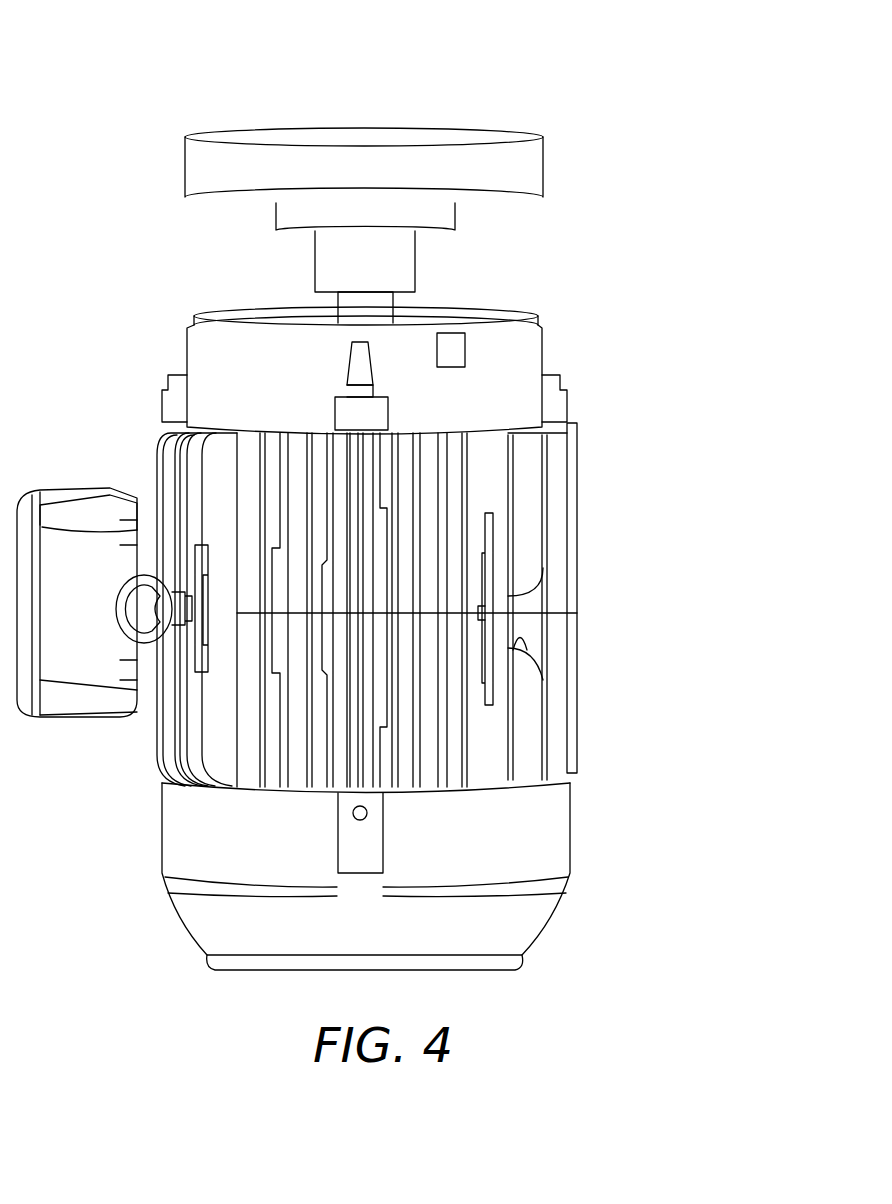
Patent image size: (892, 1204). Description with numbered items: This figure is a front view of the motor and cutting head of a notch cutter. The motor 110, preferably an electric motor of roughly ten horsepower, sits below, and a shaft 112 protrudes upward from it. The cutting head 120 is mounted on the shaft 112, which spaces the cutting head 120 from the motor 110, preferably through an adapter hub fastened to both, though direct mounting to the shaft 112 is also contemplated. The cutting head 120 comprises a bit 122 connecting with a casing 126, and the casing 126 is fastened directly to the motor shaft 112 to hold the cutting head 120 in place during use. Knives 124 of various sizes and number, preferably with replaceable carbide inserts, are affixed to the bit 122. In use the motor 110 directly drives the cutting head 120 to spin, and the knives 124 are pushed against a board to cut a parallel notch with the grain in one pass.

The motor 110 is at (159, 313).
The shaft 112 is at (368, 303).
The cutting head 120 is at (160, 117).
The bit 122 is at (543, 160).
The knives 124 is at (427, 110).
The casing 126 is at (415, 257).